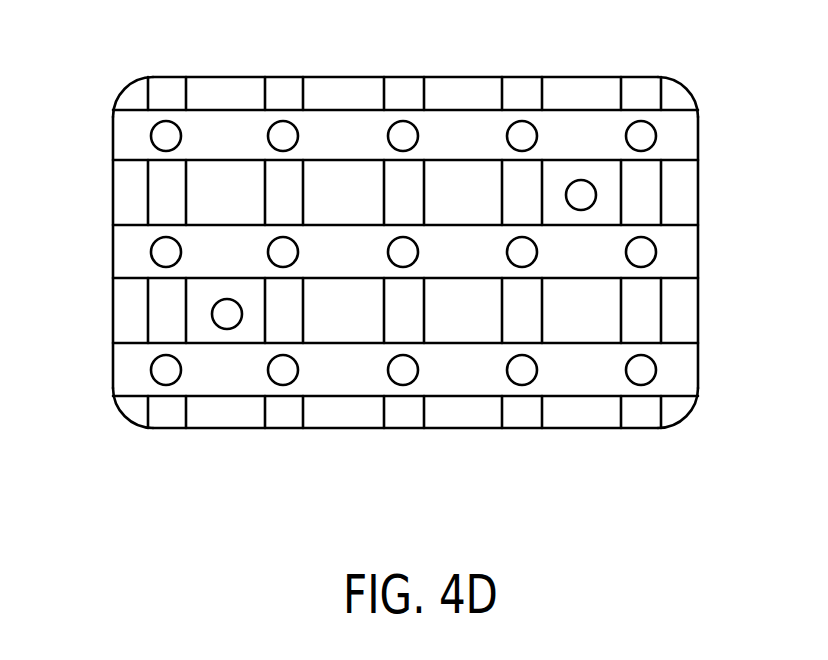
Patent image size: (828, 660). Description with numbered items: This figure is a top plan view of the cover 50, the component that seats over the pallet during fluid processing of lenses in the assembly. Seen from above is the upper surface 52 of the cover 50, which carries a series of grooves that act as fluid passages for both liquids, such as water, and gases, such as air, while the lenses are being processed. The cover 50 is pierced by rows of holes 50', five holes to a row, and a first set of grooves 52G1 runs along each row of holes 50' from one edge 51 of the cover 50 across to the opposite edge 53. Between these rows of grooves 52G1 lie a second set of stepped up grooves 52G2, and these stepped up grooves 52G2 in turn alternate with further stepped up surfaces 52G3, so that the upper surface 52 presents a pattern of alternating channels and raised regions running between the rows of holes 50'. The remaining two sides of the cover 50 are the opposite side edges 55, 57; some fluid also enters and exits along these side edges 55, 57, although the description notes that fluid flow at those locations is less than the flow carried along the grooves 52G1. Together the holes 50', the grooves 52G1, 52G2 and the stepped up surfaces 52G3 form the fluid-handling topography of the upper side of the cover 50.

The cover 50 is at (405, 219).
The hole 50' is at (175, 95).
The edge 51 is at (113, 226).
The upper surface 52 is at (460, 85).
The grooves 52G1 is at (72, 392).
The stepped up grooves 52G2 is at (252, 212).
The stepped up surfaces 52G3 is at (165, 314).
The opposite edge 53 is at (698, 225).
The side edge 55 is at (352, 430).
The side edge 57 is at (374, 78).